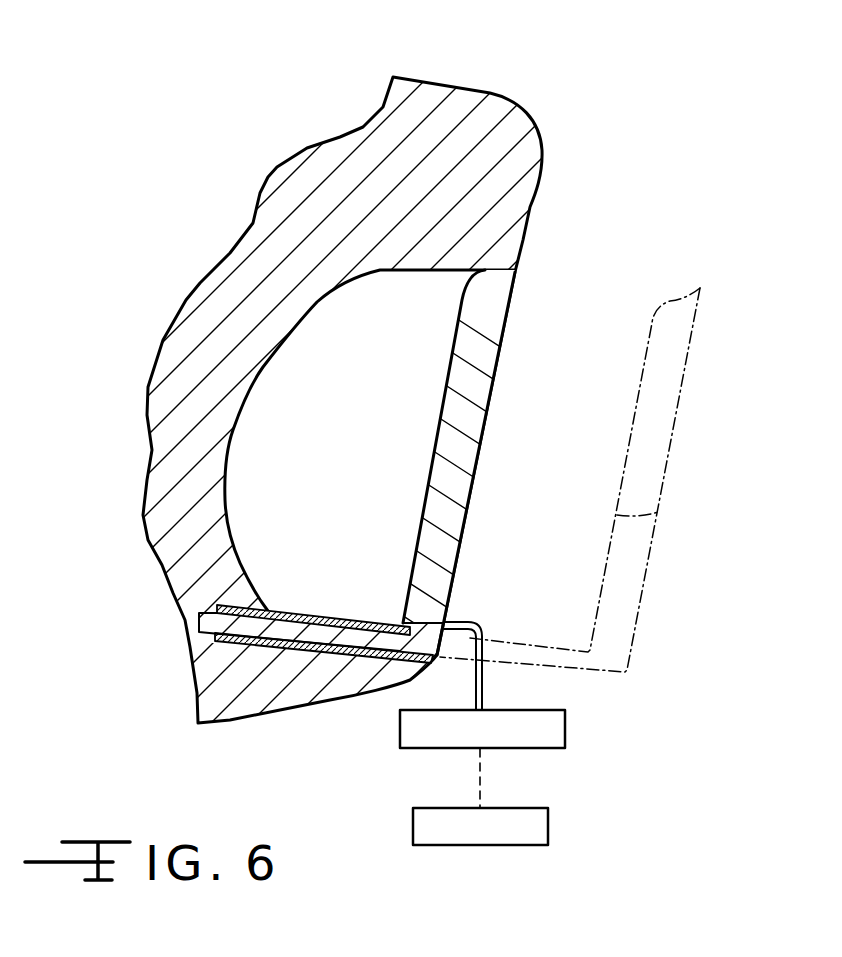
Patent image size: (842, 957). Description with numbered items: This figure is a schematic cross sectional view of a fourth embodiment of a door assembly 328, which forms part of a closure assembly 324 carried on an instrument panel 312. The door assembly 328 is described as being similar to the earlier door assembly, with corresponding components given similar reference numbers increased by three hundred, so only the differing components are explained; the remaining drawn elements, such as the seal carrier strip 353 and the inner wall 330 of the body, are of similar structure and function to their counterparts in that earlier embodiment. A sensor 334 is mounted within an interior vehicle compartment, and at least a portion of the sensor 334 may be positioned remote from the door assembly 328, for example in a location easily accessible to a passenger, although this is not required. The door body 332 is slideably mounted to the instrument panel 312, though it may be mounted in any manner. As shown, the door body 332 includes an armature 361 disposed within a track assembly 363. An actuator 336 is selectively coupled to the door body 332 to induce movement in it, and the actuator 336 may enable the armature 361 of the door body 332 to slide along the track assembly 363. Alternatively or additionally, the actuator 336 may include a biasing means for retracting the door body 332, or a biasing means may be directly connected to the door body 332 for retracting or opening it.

The closure assembly 324 is at (234, 73).
The instrument panel 312 is at (488, 93).
The door assembly 328 is at (581, 205).
The seal carrier strip 353 is at (512, 272).
The door body 332 is at (486, 435).
The inner wall of body 330 is at (237, 408).
The track assembly 363 is at (243, 633).
The armature 361 is at (313, 635).
The actuator 336 is at (400, 727).
The sensor 334 is at (414, 825).